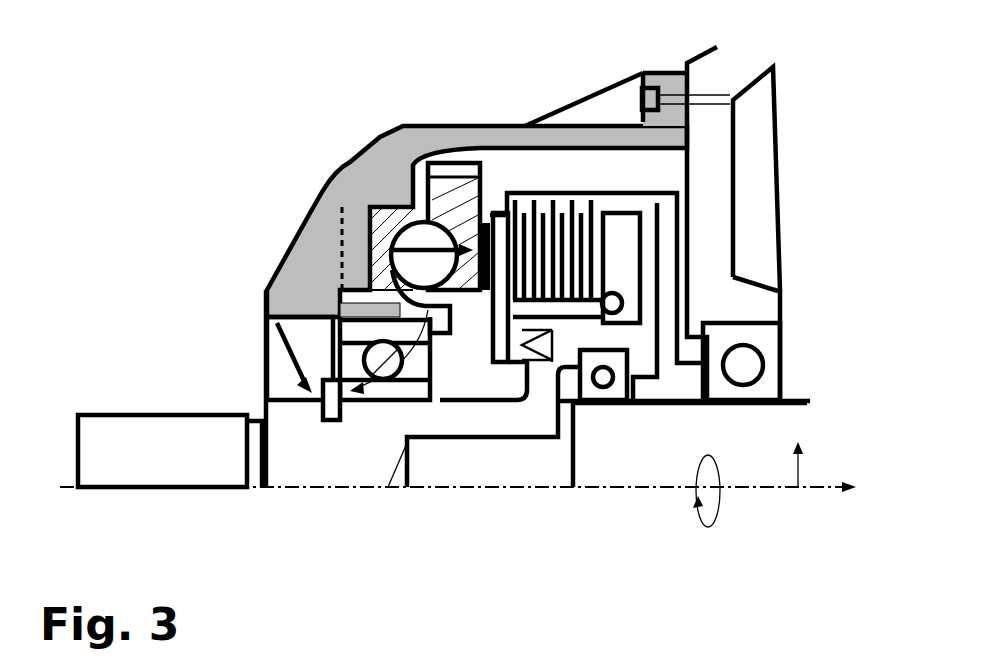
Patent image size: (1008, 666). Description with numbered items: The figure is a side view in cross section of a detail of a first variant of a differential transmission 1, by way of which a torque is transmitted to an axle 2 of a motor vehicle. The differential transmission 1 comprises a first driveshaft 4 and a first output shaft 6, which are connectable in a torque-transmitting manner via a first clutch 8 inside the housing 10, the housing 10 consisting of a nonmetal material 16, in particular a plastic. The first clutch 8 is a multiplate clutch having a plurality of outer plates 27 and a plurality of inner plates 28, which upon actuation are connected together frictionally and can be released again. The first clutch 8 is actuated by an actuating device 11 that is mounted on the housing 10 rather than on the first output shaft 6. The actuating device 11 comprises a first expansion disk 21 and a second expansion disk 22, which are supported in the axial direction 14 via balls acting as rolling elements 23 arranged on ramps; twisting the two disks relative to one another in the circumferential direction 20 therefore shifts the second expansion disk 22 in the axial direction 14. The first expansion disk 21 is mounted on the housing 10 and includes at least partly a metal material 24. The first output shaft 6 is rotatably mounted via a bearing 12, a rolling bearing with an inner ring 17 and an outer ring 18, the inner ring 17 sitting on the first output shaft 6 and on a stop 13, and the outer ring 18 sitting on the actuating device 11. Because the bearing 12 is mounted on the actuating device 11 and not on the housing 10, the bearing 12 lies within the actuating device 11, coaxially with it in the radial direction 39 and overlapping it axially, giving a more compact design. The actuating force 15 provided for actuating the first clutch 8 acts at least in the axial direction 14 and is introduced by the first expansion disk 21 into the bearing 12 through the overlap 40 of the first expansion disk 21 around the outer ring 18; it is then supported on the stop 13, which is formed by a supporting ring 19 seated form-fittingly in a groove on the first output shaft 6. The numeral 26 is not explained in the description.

The differential transmission 1 is at (800, 102).
The axle 2 is at (762, 487).
The first driveshaft 4 is at (617, 460).
The first output shaft 6 is at (337, 472).
The first clutch 8 is at (540, 150).
The housing 10 is at (331, 192).
The actuating device 11 is at (352, 283).
The bearing 12 is at (462, 387).
The stop 13 is at (323, 404).
The axial direction 14 is at (458, 508).
The actuating force 15 is at (338, 380).
The nonmetal material 16 is at (328, 207).
The inner ring 17 is at (370, 402).
The outer ring 18 is at (345, 370).
The supporting ring 19 is at (333, 382).
The circumferential direction 20 is at (705, 513).
The first expansion disk 21 is at (343, 213).
The second expansion disk 22 is at (453, 190).
The rolling elements 23 is at (402, 176).
The metal material 24 is at (352, 270).
The clutch housing 26 is at (390, 665).
The outer plates 27 is at (593, 212).
The inner plates 28 is at (585, 283).
The radial direction 39 is at (822, 464).
The overlap 40 is at (451, 333).